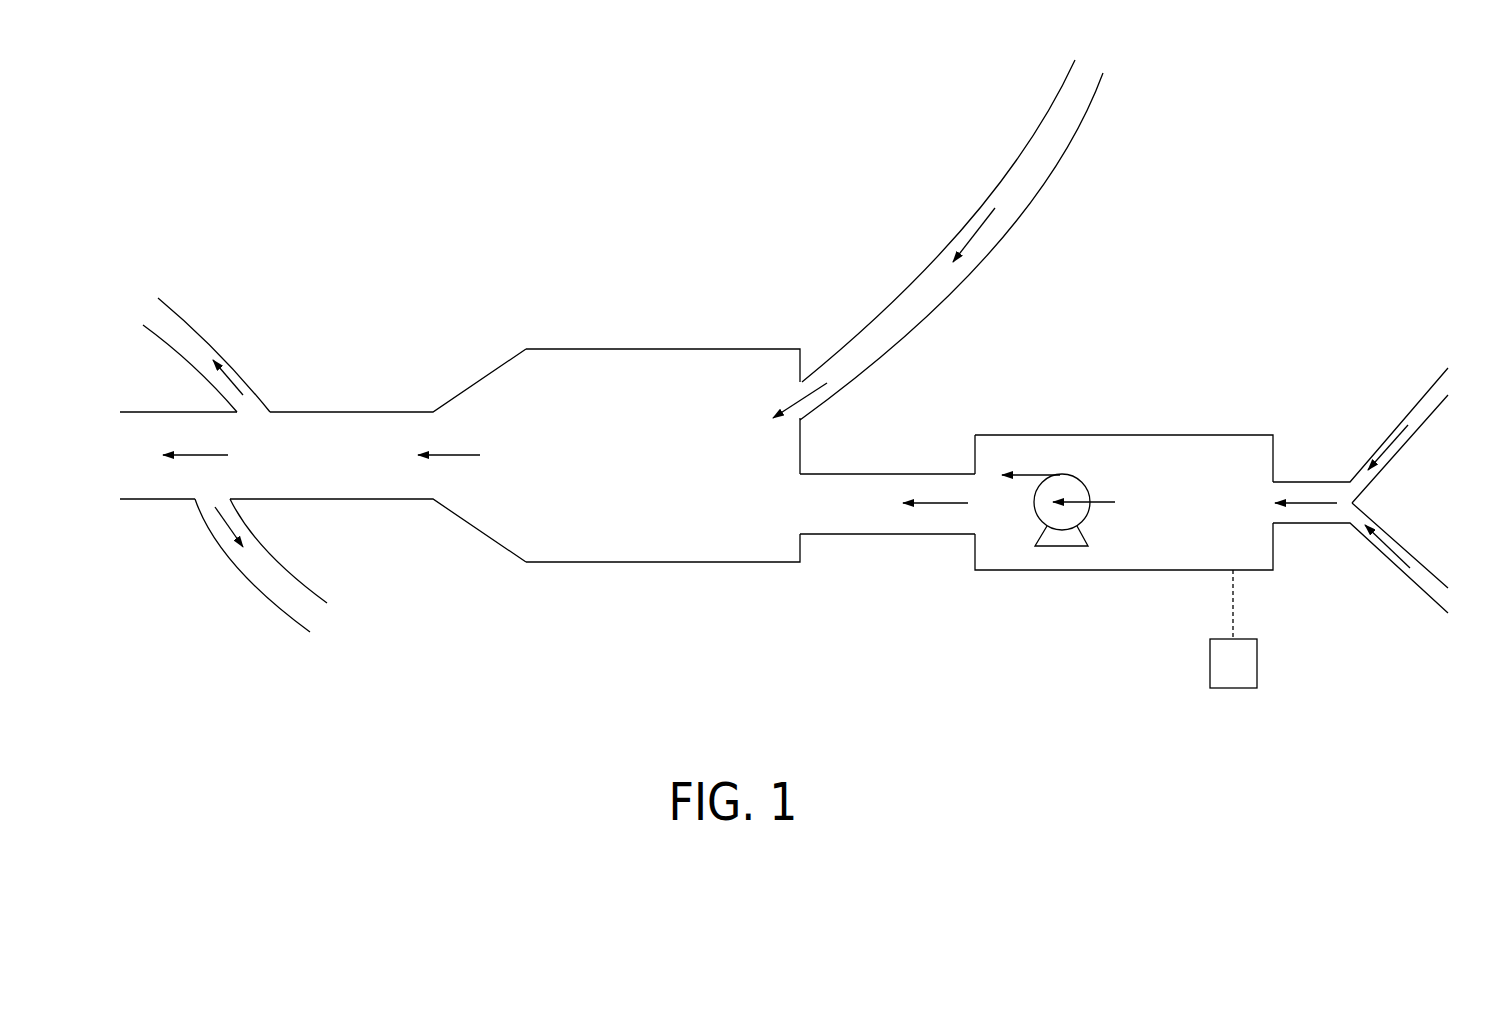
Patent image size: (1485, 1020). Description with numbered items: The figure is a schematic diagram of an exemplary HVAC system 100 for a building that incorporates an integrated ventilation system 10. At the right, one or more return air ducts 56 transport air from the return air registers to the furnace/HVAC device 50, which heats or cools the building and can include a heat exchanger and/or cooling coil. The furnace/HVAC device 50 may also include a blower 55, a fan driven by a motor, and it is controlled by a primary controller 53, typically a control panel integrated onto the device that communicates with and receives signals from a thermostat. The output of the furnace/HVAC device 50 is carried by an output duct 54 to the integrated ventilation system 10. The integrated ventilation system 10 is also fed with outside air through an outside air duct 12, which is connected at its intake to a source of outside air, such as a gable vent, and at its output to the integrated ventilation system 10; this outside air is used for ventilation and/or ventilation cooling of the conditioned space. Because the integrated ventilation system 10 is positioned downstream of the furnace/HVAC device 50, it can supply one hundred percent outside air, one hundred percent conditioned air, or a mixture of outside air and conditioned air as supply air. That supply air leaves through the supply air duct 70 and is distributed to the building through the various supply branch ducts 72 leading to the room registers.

The HVAC system 100 is at (465, 137).
The integrated ventilation system 10 is at (618, 462).
The outside air duct 12 is at (965, 225).
The furnace/HVAC device 50 is at (1124, 472).
The primary controller 53 is at (1221, 678).
The output duct 54 is at (883, 534).
The blower 55 is at (1080, 467).
The return air ducts 56 is at (1393, 430).
The supply air duct 70 is at (332, 500).
The supply branch ducts 72 is at (232, 358).